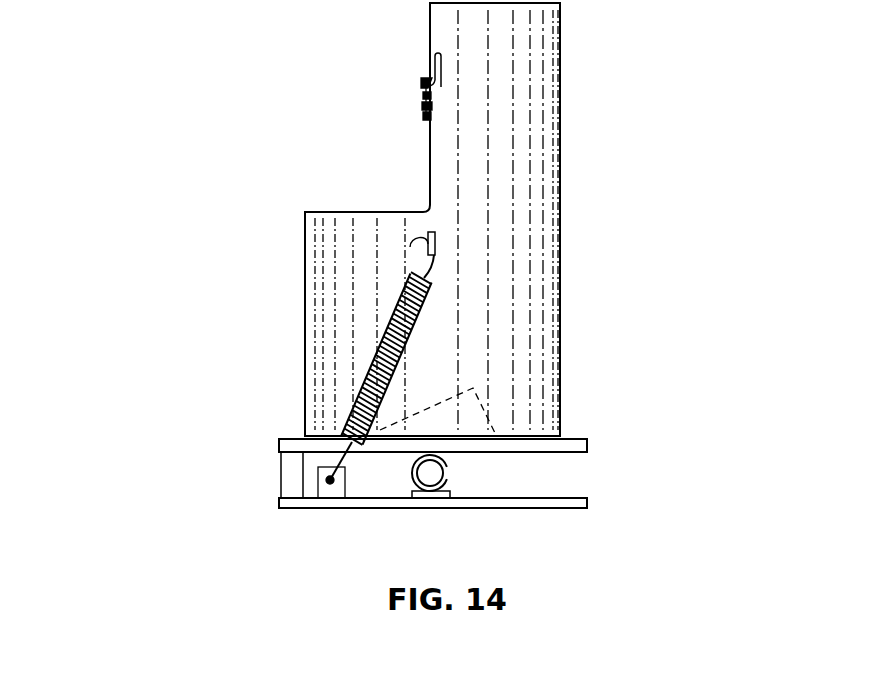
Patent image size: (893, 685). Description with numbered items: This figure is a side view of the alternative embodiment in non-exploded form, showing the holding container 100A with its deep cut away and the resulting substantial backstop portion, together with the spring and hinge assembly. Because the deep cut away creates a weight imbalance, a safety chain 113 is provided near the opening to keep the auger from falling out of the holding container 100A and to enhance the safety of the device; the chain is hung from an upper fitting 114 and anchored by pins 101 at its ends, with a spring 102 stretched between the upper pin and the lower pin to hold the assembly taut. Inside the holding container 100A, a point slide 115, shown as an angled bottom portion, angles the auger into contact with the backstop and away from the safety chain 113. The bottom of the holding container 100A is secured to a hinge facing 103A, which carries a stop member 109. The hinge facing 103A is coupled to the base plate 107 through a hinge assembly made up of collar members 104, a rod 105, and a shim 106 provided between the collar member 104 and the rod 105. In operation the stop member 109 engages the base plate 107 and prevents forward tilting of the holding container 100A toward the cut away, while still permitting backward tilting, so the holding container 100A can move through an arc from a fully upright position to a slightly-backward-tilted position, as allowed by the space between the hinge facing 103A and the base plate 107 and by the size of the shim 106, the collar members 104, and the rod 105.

The holding container 100A is at (513, 73).
The hook 114 is at (430, 60).
The safety chain 113 is at (415, 112).
The pin 101 is at (440, 236).
The spring 102 is at (363, 357).
The point slide 115 is at (492, 403).
The hinge facing 103A is at (590, 438).
The stop member 109 is at (273, 470).
The collar member 104 is at (407, 470).
The rod 105 is at (432, 473).
The shim 106 is at (457, 492).
The base plate 107 is at (520, 510).